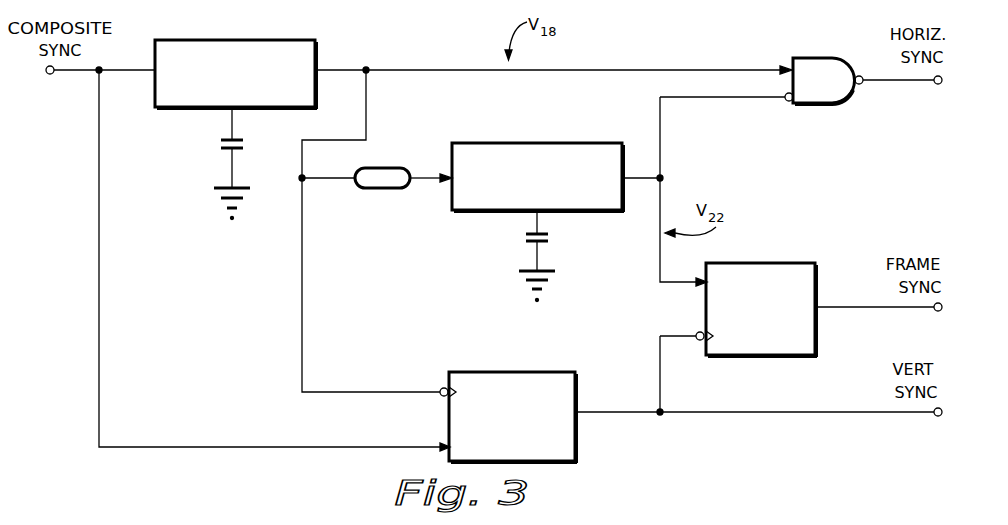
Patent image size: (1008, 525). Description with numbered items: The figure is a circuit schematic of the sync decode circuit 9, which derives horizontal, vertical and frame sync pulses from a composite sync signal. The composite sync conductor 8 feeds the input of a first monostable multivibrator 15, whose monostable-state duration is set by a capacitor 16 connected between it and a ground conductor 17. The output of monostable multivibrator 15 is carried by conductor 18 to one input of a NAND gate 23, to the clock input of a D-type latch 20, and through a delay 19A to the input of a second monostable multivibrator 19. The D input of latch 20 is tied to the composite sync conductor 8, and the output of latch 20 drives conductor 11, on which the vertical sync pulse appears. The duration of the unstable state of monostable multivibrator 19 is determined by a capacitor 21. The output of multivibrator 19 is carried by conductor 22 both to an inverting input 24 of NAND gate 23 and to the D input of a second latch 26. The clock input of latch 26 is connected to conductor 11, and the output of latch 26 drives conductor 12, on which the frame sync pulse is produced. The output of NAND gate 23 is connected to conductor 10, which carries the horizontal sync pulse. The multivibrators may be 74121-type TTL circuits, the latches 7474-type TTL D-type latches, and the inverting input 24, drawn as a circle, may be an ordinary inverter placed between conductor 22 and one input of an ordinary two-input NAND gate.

The composite sync conductor 8 is at (52, 76).
The sync decode circuit 9 is at (122, 460).
The conductor 10 is at (937, 86).
The conductor 11 is at (838, 388).
The conductor 12 is at (870, 308).
The monostable multivibrator 15 is at (280, 38).
The capacitor 16 is at (228, 140).
The ground conductor 17 is at (227, 185).
The conductor 18 is at (397, 67).
The second monostable multivibrator 19 is at (605, 140).
The delay 19A is at (388, 166).
The D-type latch 20 is at (508, 402).
The capacitor 21 is at (545, 243).
The conductor 22 is at (663, 135).
The NAND gate 23 is at (850, 40).
The inverting input 24 is at (788, 103).
The second latch 26 is at (780, 262).